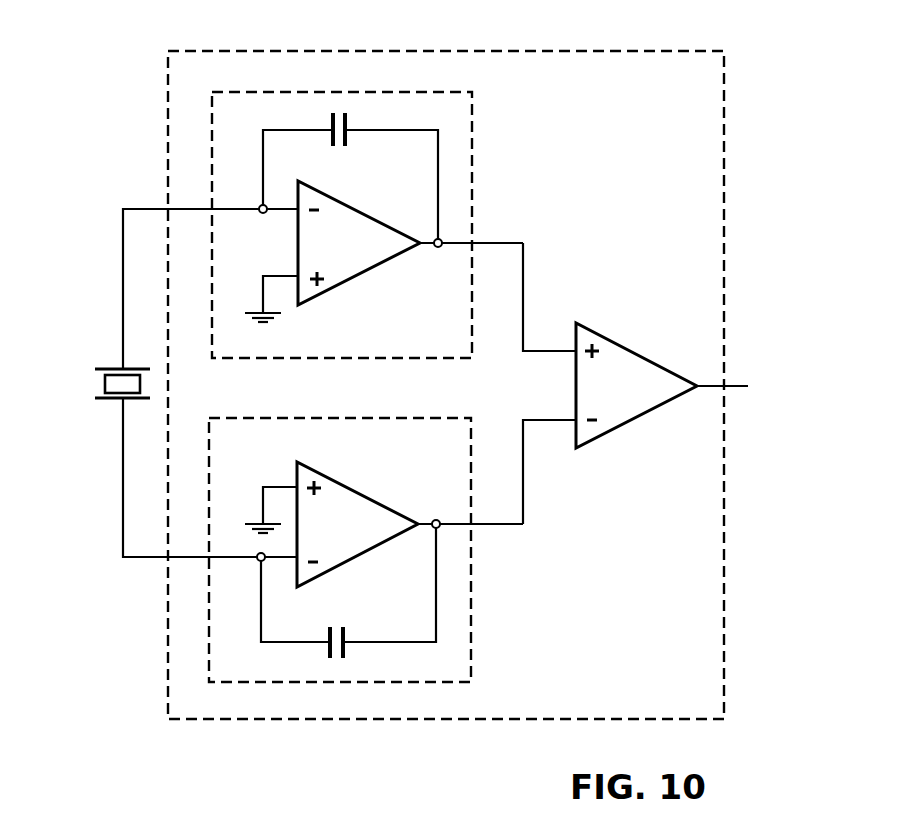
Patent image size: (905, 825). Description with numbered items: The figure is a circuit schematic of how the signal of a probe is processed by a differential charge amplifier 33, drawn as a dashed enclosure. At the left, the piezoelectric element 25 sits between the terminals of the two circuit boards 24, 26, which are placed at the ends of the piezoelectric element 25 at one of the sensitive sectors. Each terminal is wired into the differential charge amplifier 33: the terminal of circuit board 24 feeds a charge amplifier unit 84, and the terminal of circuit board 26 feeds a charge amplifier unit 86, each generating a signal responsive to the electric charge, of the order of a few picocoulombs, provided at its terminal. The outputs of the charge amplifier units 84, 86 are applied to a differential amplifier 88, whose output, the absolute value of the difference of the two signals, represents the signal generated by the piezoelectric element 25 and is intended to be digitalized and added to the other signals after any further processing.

The differential charge amplifier 33 is at (685, 160).
The charge amplifier unit 84 is at (244, 173).
The charge amplifier unit 86 is at (242, 665).
The differential amplifier 88 is at (658, 386).
The circuit board 24 is at (110, 368).
The piezoelectric element 25 is at (121, 384).
The circuit board 26 is at (120, 399).